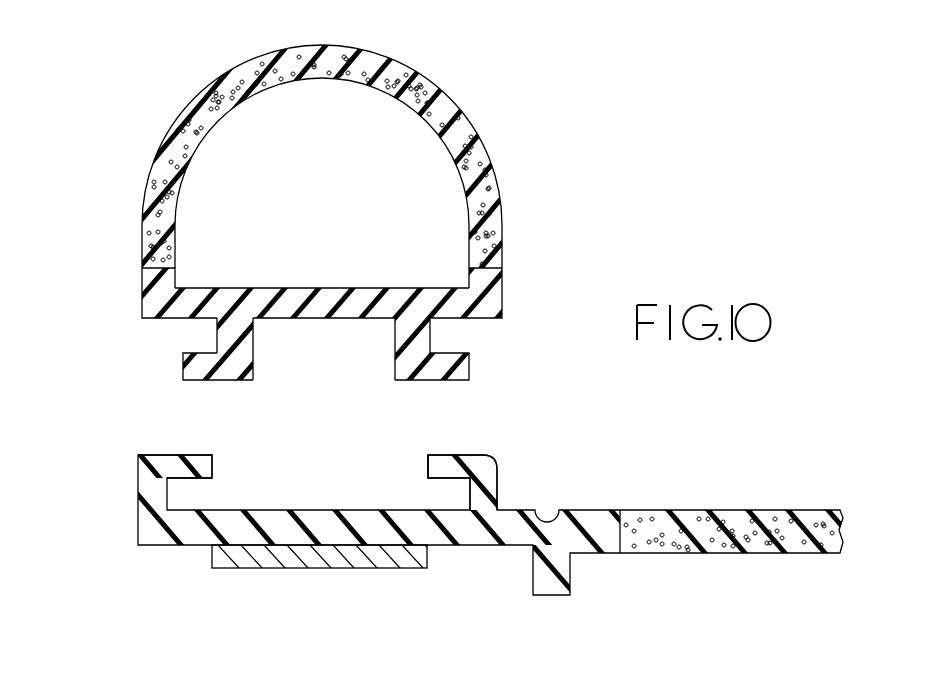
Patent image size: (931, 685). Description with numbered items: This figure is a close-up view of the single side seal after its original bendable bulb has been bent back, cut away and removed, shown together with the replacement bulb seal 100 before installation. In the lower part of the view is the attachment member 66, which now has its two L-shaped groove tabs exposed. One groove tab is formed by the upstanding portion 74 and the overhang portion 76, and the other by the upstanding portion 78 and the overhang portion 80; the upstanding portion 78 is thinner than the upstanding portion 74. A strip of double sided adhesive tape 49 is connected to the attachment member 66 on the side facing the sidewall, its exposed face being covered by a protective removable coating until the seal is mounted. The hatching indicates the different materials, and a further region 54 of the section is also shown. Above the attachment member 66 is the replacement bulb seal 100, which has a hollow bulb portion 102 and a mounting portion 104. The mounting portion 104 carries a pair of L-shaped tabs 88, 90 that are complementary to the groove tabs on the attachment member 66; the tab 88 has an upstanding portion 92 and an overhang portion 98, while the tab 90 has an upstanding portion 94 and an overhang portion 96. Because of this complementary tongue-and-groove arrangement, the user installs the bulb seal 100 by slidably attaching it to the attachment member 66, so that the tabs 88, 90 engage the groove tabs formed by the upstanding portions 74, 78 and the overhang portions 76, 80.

The bulb seal 100 is at (126, 137).
The bulb portion 102 is at (465, 74).
The mounting portion 104 is at (522, 268).
The upstanding portion 92 is at (432, 340).
The upstanding portion 94 is at (230, 340).
The overhang portion 96 is at (217, 376).
The overhang portion 98 is at (468, 377).
The L-shaped tab 90 is at (281, 374).
The L-shaped tab 88 is at (373, 375).
The attachment member 66 is at (124, 568).
The upstanding portion 74 is at (148, 491).
The overhang portion 76 is at (178, 465).
The upstanding portion 78 is at (494, 481).
The overhang portion 80 is at (433, 454).
The panel 54 is at (774, 514).
The double sided adhesive tape 49 is at (323, 560).